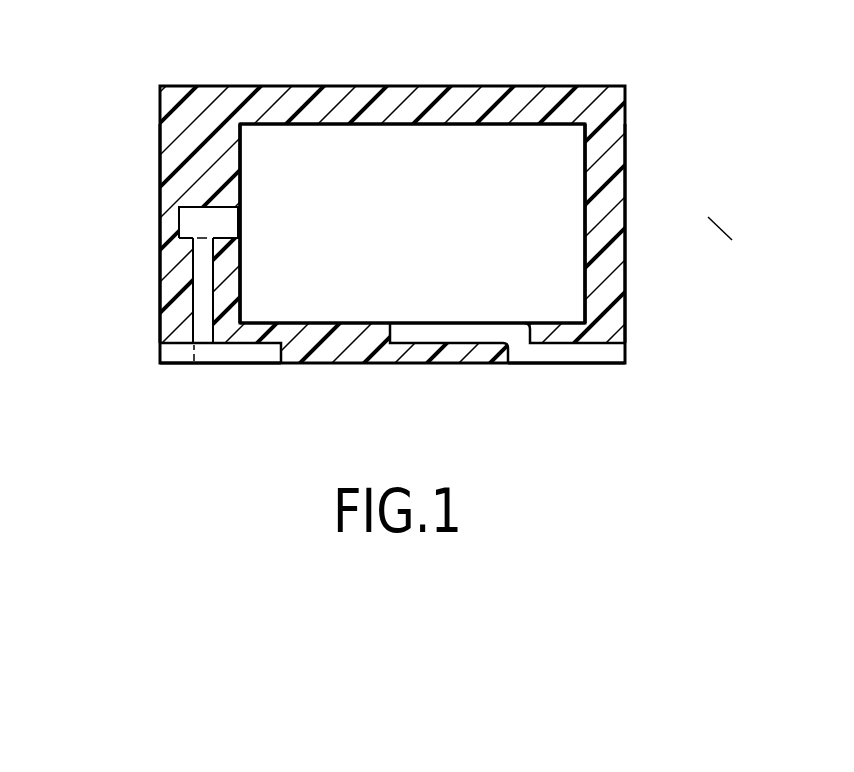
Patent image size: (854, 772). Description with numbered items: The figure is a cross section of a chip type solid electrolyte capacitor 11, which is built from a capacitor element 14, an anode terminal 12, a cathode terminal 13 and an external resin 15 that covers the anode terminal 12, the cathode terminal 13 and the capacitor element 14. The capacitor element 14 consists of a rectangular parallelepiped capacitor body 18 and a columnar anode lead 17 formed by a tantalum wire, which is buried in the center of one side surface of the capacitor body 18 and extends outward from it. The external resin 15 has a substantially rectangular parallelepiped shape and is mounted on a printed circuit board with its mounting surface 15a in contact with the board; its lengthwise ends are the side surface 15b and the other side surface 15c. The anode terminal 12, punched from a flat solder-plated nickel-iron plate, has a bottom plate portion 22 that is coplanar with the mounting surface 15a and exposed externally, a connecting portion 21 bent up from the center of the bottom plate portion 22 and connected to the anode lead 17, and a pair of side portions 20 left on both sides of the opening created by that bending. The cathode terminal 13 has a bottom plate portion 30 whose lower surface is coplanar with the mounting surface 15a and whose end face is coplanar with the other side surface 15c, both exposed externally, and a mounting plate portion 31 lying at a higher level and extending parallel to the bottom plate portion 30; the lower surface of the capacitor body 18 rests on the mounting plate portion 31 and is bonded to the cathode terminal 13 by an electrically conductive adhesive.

The chip type solid electrolyte capacitor 11 is at (643, 85).
The anode terminal 12 is at (191, 307).
The cathode terminal 13 is at (603, 340).
The capacitor element 14 is at (405, 123).
The external resin 15 is at (523, 92).
The mounting surface 15a is at (336, 363).
The side surface of external resin 15b is at (160, 168).
The other side surface of external resin 15c is at (627, 182).
The anode lead 17 is at (227, 223).
The capacitor body 18 is at (301, 143).
The side portions 20 is at (170, 355).
The connecting portion 21 is at (205, 264).
The bottom plate portion 22 is at (237, 350).
The bottom plate portion 30 is at (580, 350).
The mounting plate portion 31 is at (417, 340).